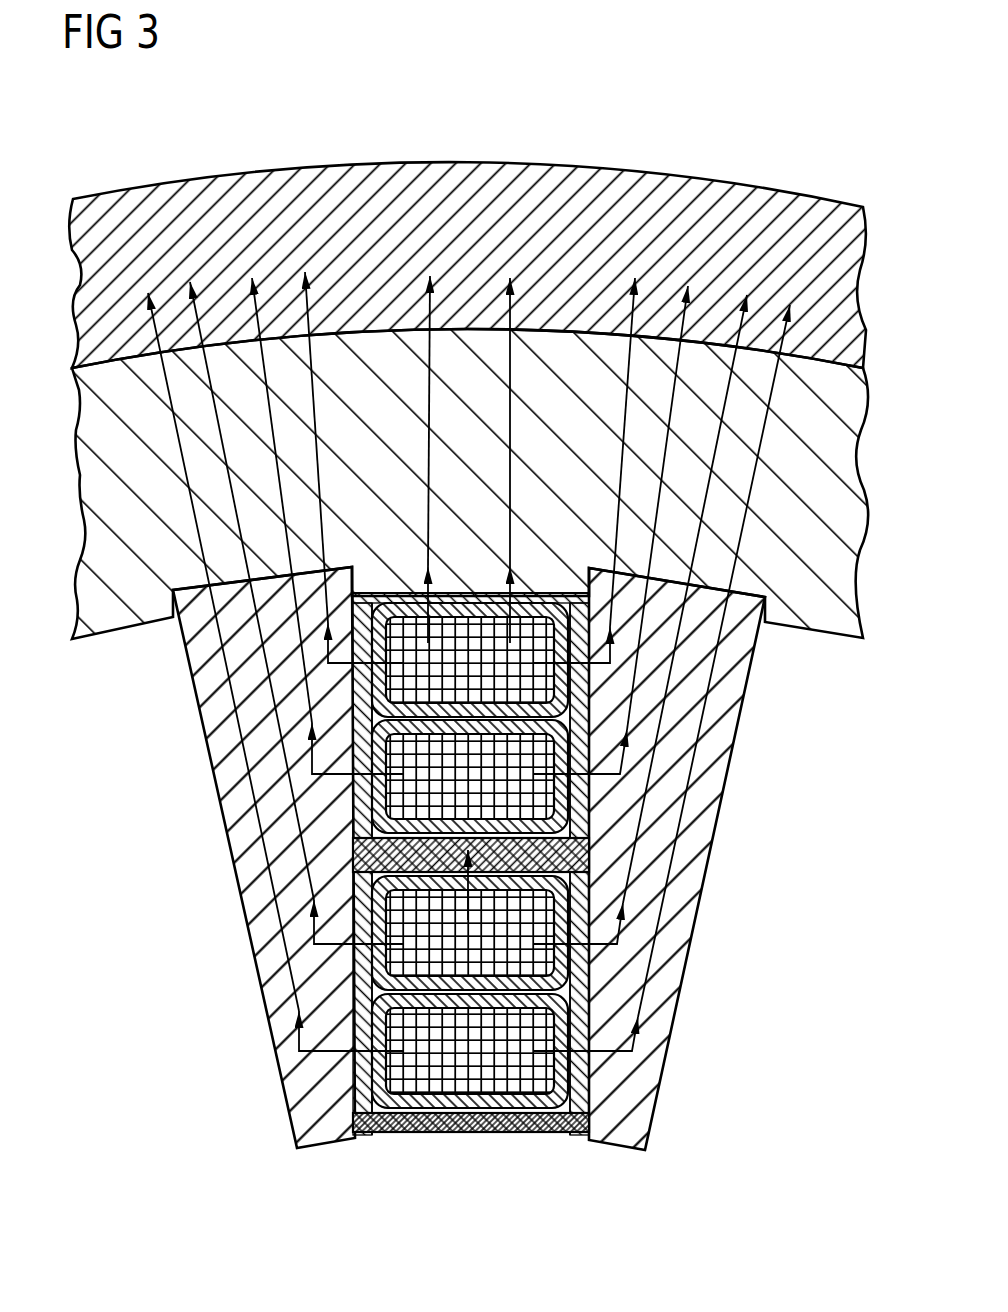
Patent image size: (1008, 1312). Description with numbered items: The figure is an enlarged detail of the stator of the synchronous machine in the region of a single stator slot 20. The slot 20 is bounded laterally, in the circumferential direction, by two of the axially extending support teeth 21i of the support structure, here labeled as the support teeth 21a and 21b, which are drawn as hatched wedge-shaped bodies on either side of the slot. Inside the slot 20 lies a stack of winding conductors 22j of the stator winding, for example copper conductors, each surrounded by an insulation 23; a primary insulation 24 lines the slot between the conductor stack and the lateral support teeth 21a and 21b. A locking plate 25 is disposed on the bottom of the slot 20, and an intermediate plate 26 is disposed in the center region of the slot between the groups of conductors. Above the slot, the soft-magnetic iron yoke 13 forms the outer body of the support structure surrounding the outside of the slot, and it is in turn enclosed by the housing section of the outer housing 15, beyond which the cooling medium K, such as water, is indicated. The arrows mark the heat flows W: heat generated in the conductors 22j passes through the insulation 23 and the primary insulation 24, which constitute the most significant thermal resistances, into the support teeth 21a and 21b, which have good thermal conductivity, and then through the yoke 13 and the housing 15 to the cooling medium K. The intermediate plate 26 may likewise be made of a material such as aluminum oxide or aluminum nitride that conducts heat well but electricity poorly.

The soft-magnetic iron yoke 13 is at (703, 240).
The outer housing 15 is at (843, 222).
The stator slot 20 is at (564, 863).
The support tooth 21a is at (295, 1085).
The support tooth 21b is at (718, 738).
The support teeth 21i is at (744, 859).
The winding conductors 22j is at (413, 1063).
The insulation 23 is at (482, 1100).
The primary insulation 24 is at (580, 1080).
The locking plate 25 is at (537, 1122).
The intermediate plate 26 is at (578, 852).
The heat flows W is at (500, 245).
The cooling medium K is at (216, 152).